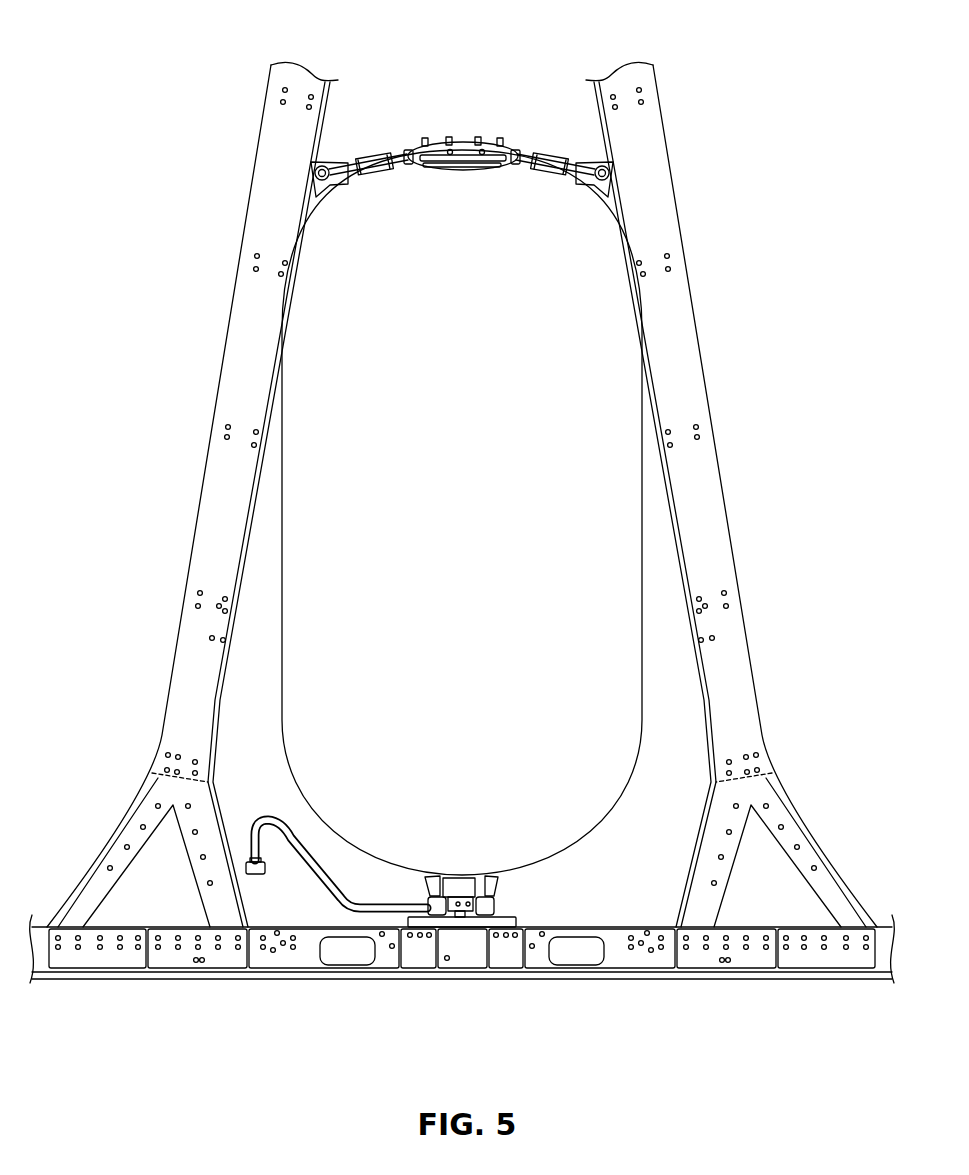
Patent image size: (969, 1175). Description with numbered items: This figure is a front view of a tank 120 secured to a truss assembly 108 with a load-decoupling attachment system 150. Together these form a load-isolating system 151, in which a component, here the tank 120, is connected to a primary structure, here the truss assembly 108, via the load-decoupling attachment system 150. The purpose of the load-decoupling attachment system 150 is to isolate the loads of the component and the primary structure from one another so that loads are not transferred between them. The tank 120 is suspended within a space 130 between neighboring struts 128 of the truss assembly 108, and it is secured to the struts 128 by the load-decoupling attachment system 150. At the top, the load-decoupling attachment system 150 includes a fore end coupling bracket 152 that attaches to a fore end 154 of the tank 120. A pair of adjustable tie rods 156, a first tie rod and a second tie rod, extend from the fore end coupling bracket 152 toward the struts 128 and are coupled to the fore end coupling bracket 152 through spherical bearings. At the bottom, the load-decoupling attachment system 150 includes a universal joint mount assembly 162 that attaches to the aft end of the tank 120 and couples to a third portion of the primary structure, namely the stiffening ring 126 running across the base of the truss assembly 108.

The truss assembly 108 is at (188, 498).
The tank 120 is at (622, 418).
The stiffening ring 126 is at (212, 968).
The struts 128 is at (245, 332).
The space 130 is at (672, 705).
The load-decoupling attachment system 150 is at (520, 108).
The load-isolating system 151 is at (198, 104).
The fore end coupling bracket 152 is at (446, 138).
The fore end 154 is at (456, 172).
The adjustable tie rods 156 is at (373, 155).
The universal joint mount assembly 162 is at (487, 908).